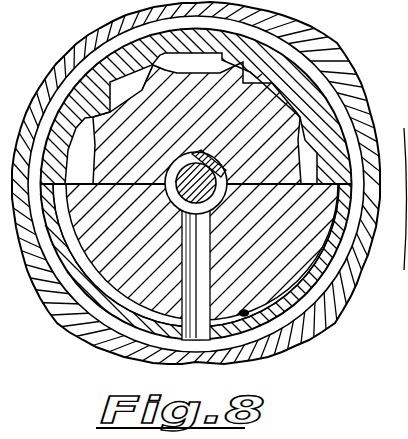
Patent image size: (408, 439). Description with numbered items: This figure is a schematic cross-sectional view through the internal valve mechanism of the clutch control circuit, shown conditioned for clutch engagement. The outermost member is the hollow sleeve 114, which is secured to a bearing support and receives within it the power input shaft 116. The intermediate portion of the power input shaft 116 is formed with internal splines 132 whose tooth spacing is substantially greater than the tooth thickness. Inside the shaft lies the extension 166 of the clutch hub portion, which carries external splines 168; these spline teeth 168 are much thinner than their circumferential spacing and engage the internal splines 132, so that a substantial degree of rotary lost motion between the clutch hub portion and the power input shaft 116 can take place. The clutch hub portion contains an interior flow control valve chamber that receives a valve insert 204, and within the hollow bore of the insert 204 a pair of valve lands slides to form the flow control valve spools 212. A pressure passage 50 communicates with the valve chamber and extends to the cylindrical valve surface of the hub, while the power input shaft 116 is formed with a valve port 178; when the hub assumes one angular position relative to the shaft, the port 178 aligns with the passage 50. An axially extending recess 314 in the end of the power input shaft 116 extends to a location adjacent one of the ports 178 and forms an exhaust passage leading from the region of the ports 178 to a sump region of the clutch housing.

The hollow sleeve 114 is at (321, 44).
The power input shaft 116 is at (318, 90).
The internal splines 132 is at (254, 78).
The extension 166 is at (129, 125).
The external splines 168 is at (155, 65).
The valve port 178 is at (142, 342).
The valve insert 204 is at (199, 155).
The flow control valve spools 212 is at (199, 190).
The pressure passage 50 is at (192, 236).
The axially extending recess 314 is at (246, 317).